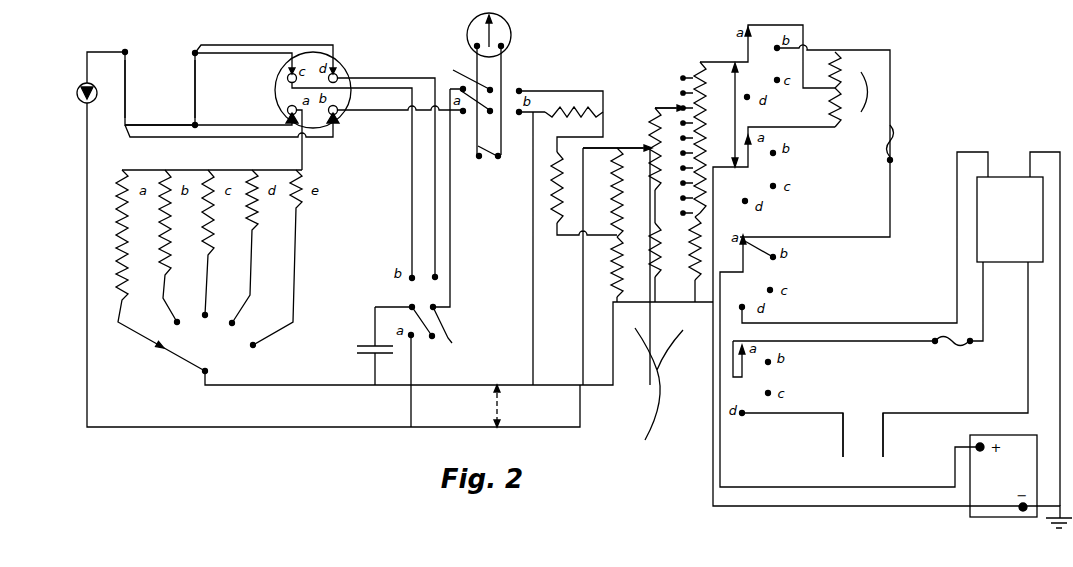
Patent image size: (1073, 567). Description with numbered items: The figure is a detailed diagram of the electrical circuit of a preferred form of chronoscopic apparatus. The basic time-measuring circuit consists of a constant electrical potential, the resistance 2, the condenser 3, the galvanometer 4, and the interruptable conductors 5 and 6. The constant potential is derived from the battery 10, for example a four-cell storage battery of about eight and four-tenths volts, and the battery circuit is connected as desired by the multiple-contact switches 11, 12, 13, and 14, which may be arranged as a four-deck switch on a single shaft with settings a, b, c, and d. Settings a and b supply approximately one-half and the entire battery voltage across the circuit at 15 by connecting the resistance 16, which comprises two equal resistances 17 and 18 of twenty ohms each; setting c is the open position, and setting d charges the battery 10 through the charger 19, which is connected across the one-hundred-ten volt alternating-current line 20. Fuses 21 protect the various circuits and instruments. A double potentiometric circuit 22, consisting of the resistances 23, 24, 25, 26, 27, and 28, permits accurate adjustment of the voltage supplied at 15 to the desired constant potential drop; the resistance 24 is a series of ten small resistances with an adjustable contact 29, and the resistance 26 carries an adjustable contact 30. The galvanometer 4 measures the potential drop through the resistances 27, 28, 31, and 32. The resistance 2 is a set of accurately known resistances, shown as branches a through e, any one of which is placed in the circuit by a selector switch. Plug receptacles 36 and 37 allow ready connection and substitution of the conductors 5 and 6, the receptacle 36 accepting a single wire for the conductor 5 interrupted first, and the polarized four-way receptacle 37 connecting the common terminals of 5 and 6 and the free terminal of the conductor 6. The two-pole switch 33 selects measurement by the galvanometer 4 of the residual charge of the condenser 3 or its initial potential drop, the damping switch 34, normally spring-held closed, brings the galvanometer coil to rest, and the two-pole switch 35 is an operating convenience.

The resistance 2 is at (209, 272).
The condenser 3 is at (358, 346).
The galvanometer 4 is at (499, 84).
The interruptable conductor 5 is at (130, 89).
The interruptable conductor 6 is at (184, 89).
The battery 10 is at (1003, 476).
The multiple-contact switch 11 is at (762, 63).
The multiple-contact switch 12 is at (759, 169).
The multiple-contact switch 13 is at (758, 272).
The multiple-contact switch 14 is at (755, 380).
The circuit 15 is at (729, 115).
The resistance 16 is at (872, 92).
The resistance 17 is at (847, 70).
The resistance 18 is at (845, 107).
The charger 19 is at (1010, 219).
The A. C. line 20 is at (863, 435).
The fuse 21 is at (915, 247).
The double potentiometric circuit 22 is at (647, 393).
The resistance 23 is at (683, 248).
The resistance 24 is at (711, 137).
The resistance 25 is at (644, 250).
The resistance 26 is at (645, 149).
The resistance 27 is at (605, 267).
The resistance 28 is at (605, 192).
The adjustable contact 29 is at (663, 98).
The adjustable contact 30 is at (613, 141).
The resistance 31 is at (567, 187).
The resistance 32 is at (560, 113).
The two-pole switch 33 is at (477, 92).
The damping switch 34 is at (489, 163).
The two-pole switch 35 is at (421, 322).
The plug receptacle 36 is at (72, 93).
The plug receptacle 37 is at (345, 70).